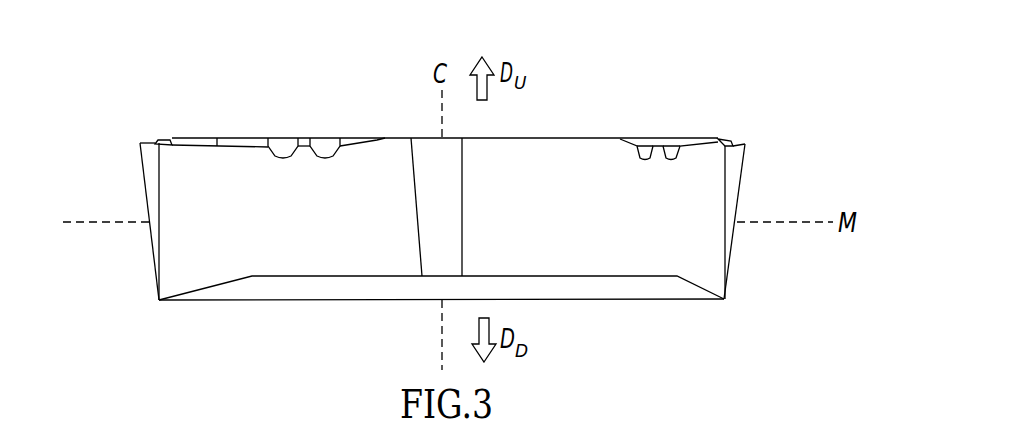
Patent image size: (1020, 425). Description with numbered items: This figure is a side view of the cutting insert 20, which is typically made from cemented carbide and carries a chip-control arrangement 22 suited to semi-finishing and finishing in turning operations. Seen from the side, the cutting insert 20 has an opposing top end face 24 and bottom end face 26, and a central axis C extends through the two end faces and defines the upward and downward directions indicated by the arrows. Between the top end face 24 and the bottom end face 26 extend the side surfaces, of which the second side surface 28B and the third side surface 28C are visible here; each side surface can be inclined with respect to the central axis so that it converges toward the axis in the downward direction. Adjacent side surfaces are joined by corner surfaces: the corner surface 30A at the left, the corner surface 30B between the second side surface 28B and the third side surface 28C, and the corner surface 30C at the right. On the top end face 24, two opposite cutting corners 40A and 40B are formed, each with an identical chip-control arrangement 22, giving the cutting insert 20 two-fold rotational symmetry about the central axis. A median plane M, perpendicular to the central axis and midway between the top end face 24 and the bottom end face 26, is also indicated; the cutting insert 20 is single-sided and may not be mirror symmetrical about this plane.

The cutting insert 20 is at (260, 120).
The chip-control arrangement 22 is at (162, 120).
The top end face 24 is at (568, 122).
The bottom end face 26 is at (573, 325).
The second side surface 28B is at (302, 228).
The third side surface 28C is at (653, 213).
The corner surface 30A is at (157, 230).
The corner surface 30B is at (438, 232).
The corner surface 30C is at (730, 232).
The cutting corner 40A is at (147, 124).
The cutting corner 40B is at (738, 122).